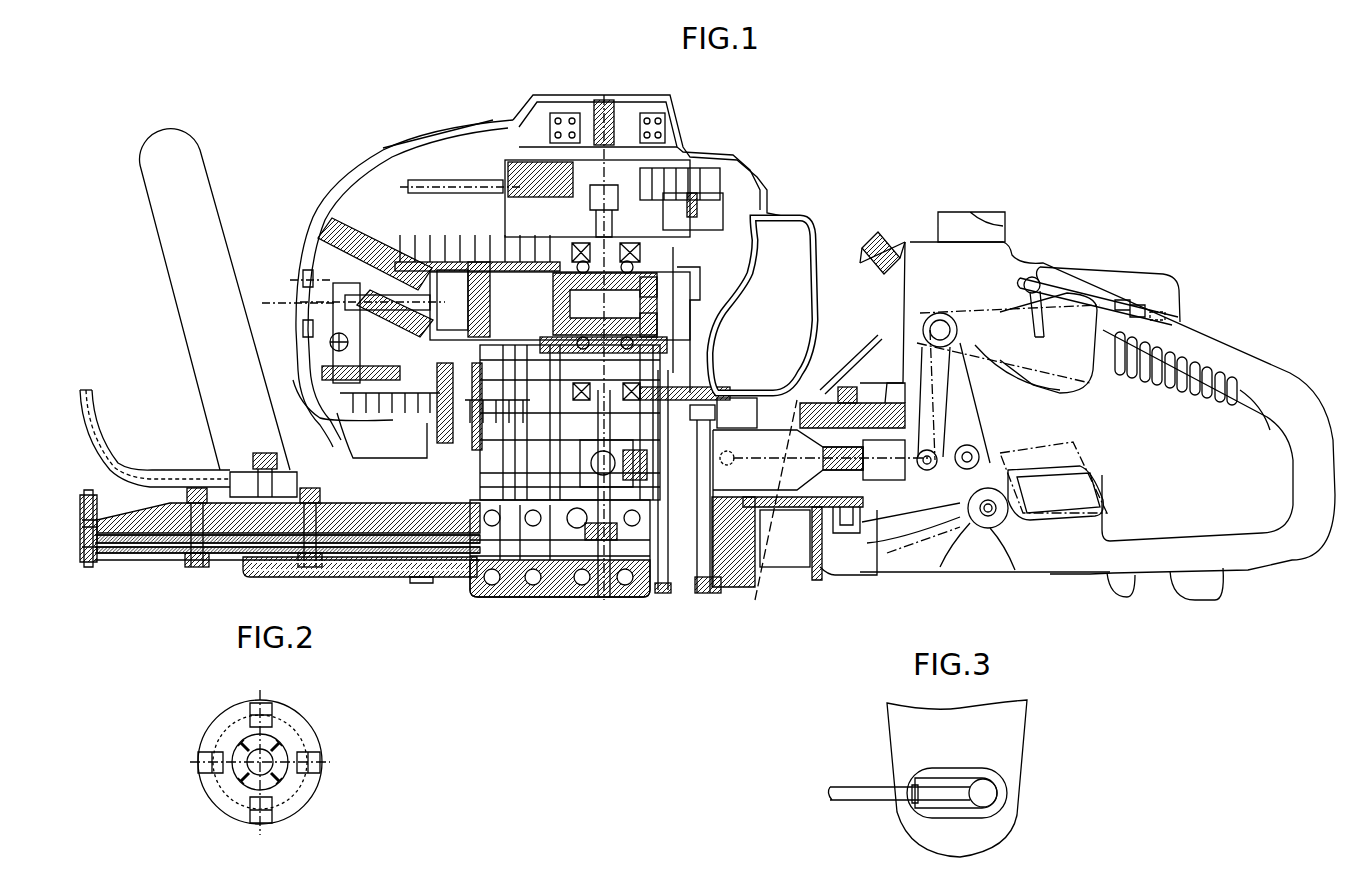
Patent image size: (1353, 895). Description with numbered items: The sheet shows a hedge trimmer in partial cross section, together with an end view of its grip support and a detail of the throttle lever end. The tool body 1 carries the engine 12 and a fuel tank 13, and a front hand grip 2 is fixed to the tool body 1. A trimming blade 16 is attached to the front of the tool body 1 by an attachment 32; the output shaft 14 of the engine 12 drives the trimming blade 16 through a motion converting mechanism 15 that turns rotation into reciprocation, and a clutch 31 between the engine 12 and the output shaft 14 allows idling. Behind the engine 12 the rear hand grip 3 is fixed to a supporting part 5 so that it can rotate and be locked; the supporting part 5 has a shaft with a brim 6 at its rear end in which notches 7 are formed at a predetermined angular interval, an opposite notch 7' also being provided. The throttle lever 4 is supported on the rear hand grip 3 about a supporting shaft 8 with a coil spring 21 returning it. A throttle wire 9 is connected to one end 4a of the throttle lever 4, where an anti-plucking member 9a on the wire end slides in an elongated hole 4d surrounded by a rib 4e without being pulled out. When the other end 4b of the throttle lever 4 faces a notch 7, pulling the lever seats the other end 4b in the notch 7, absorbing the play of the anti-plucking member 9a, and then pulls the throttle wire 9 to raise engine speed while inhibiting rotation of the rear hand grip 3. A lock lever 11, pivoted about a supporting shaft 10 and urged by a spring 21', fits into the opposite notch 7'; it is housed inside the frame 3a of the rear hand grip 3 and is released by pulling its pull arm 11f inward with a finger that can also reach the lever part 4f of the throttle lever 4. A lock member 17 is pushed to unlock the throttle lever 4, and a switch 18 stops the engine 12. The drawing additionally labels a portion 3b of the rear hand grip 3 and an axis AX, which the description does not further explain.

In FIG. 1, the tool body 1 is at (588, 598).
In FIG. 1, the front hand grip 2 is at (180, 165).
In FIG. 1, the rear hand grip 3 is at (1203, 320).
In FIG. 1, the frame 3a is at (1253, 410).
In FIG. 1, the lower portion of rear handle 3b is at (1113, 577).
In FIG. 1, the throttle lever 4 is at (1082, 373).
In FIG. 1, the one end of the throttle lever 4a is at (987, 532).
In FIG. 3, the one end of the throttle lever 4a is at (975, 837).
In FIG. 1, the other end of the throttle lever 4b is at (873, 393).
In FIG. 3, the elongated hole 4d is at (945, 805).
In FIG. 3, the rib 4e is at (960, 768).
In FIG. 1, the lever part 4f is at (1053, 377).
In FIG. 1, the supporting part 5 is at (807, 567).
In FIG. 1, the brim 6 is at (950, 463).
In FIG. 2, the brim 6 is at (315, 728).
In FIG. 1, the notch 7 is at (922, 280).
In FIG. 2, the notch 7 is at (263, 714).
In FIG. 2, the opposite notch 7' is at (256, 834).
In FIG. 1, the supporting shaft 8 is at (955, 330).
In FIG. 1, the throttle wire 9 is at (883, 393).
In FIG. 3, the throttle wire 9 is at (855, 782).
In FIG. 3, the anti-plucking member 9a is at (990, 793).
In FIG. 1, the supporting shaft 10 is at (1085, 512).
In FIG. 1, the lock lever 11 is at (927, 513).
In FIG. 1, the pull arm 11f is at (1113, 512).
In FIG. 1, the engine 12 is at (403, 200).
In FIG. 1, the fuel tank 13 is at (790, 217).
In FIG. 1, the output shaft 14 is at (628, 597).
In FIG. 1, the motion converting mechanism 15 is at (495, 598).
In FIG. 1, the trimming blade 16 is at (130, 555).
In FIG. 1, the lock member 17 is at (1110, 274).
In FIG. 1, the switch 18 is at (975, 232).
In FIG. 1, the coil spring 21 is at (1047, 299).
In FIG. 1, the spring 21' is at (1081, 477).
In FIG. 1, the clutch 31 is at (660, 547).
In FIG. 1, the attachment 32 is at (358, 597).
In FIG. 1, the axis AX is at (772, 512).